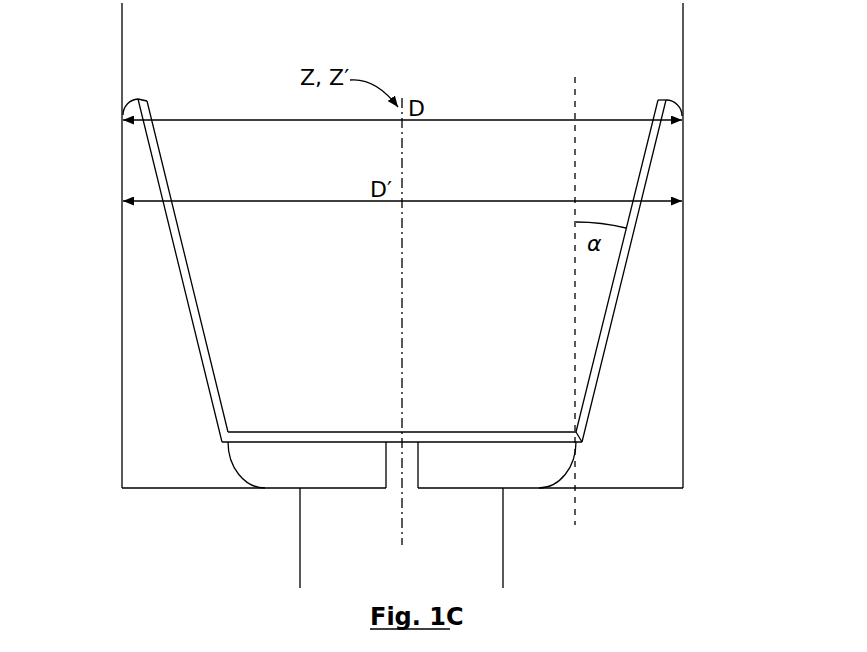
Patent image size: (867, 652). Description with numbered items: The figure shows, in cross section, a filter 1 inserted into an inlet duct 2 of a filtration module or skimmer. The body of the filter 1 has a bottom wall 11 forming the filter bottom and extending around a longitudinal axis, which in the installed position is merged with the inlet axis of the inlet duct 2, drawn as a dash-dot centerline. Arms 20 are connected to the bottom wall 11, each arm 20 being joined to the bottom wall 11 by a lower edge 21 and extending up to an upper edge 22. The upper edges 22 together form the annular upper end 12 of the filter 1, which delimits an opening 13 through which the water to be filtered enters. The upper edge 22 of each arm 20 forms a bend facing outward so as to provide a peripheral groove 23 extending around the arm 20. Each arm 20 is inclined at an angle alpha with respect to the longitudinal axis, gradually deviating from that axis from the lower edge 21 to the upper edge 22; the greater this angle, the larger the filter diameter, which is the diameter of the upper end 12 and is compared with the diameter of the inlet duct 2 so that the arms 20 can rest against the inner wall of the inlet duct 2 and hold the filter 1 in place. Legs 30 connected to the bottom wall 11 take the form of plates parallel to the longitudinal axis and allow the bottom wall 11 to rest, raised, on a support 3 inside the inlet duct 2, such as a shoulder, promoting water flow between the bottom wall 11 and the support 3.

The filter 1 is at (409, 250).
The inlet duct 2 is at (688, 165).
The support 3 is at (634, 492).
The bottom wall 11 is at (344, 430).
The upper end 12 is at (655, 96).
The opening 13 is at (433, 82).
The arm 20 is at (627, 286).
The lower edge 21 is at (589, 436).
The upper edge 22 is at (673, 102).
The peripheral groove 23 is at (130, 121).
The leg 30 is at (499, 468).